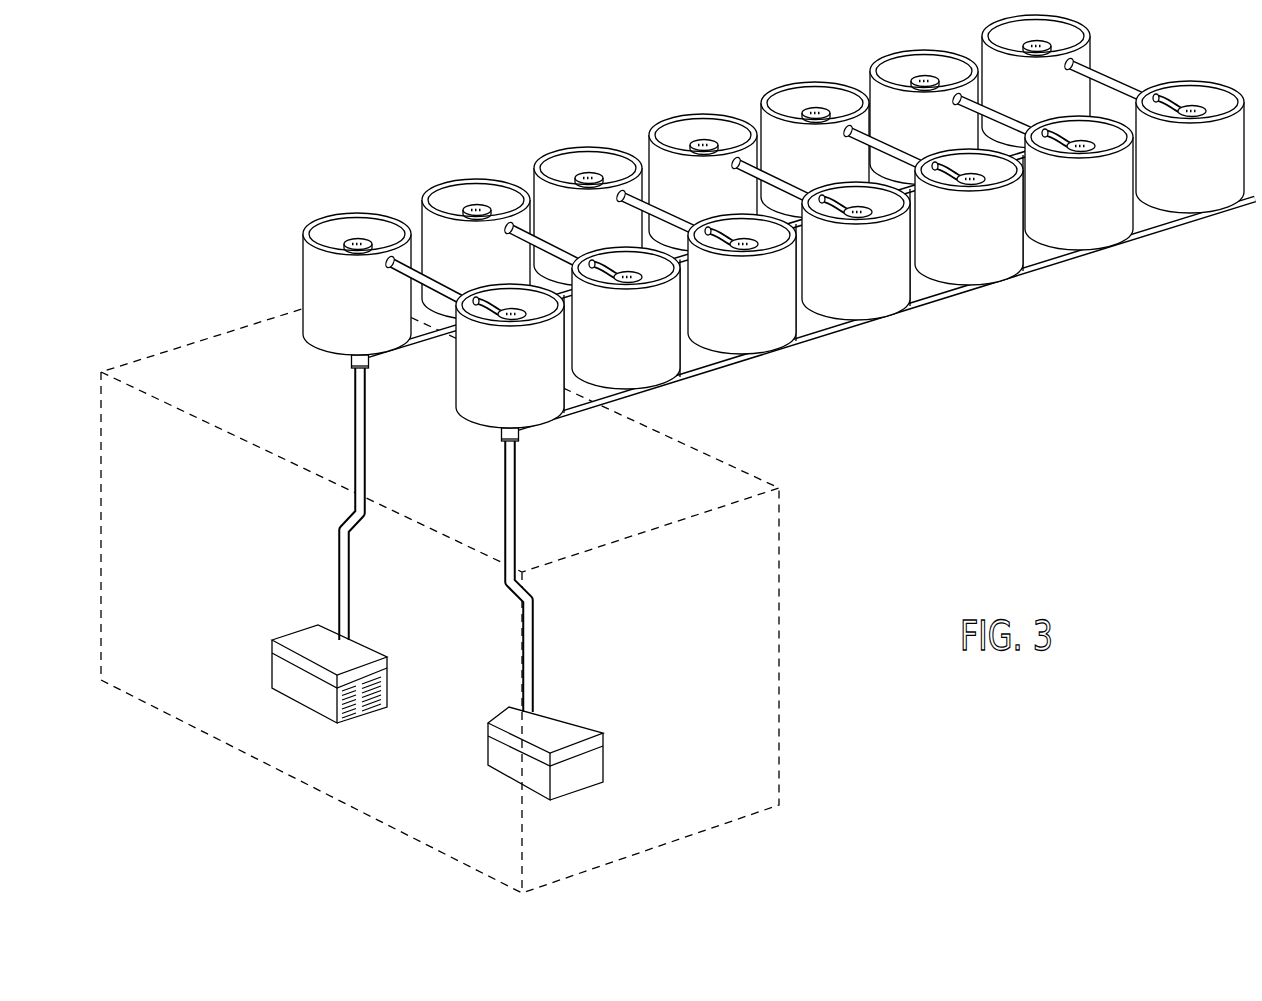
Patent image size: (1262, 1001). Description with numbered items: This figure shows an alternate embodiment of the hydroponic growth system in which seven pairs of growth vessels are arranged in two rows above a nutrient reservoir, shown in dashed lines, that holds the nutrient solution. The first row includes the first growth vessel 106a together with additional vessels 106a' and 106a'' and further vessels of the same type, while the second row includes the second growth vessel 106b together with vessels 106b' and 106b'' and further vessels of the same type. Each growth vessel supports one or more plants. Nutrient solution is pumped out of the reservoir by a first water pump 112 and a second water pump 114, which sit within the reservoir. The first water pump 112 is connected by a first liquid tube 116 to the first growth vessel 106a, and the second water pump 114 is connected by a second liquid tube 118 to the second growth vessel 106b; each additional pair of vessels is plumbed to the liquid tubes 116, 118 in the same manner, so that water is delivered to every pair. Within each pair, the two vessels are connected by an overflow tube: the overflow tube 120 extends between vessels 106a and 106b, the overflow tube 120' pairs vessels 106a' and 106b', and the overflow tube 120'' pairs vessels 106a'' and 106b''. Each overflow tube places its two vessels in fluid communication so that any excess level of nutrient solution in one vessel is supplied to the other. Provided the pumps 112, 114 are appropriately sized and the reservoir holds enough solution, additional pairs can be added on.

The first growth vessel 106a is at (347, 266).
The growth vessel 106a' is at (471, 226).
The growth vessel 106a'' is at (588, 192).
The second growth vessel 106b is at (484, 375).
The growth vessel 106b' is at (662, 330).
The growth vessel 106b'' is at (775, 298).
The first water pump 112 is at (305, 695).
The second water pump 114 is at (508, 762).
The first liquid tube 116 is at (357, 433).
The second liquid tube 118 is at (578, 405).
The overflow tube 120 is at (347, 277).
The overflow tube 120' is at (526, 171).
The overflow tube 120'' is at (653, 154).